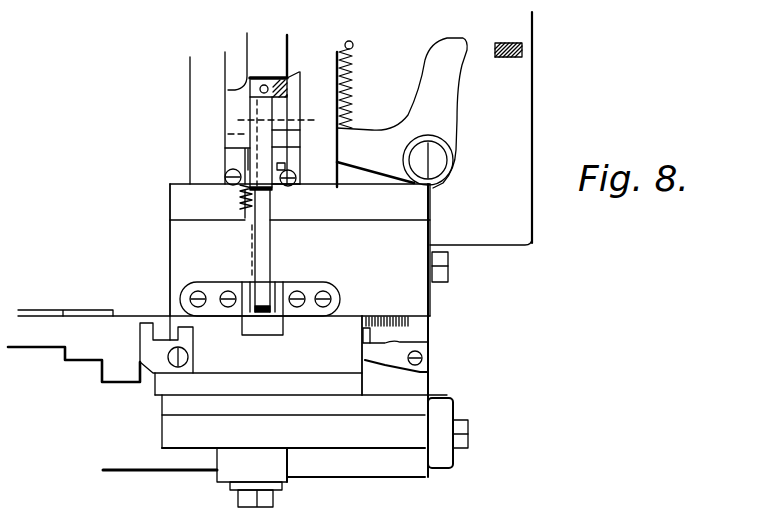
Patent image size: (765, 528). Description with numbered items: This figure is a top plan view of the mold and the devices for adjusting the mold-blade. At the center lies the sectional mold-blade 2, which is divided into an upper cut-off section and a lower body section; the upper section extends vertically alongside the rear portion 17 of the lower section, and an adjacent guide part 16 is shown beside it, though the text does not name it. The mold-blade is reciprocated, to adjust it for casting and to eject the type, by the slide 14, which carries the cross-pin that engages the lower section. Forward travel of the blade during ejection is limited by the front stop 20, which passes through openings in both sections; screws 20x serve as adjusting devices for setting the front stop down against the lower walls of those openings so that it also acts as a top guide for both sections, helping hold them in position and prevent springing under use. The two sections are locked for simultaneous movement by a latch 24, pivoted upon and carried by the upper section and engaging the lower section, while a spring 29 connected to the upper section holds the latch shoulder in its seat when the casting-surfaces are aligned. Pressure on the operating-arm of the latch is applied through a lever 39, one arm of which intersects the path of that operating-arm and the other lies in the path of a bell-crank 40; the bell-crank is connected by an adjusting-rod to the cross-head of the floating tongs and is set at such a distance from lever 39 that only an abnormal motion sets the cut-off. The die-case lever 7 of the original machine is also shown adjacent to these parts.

The sectional mold-blade 2 is at (267, 254).
The die-case lever 7 is at (310, 250).
The slide 14 is at (290, 113).
The sleeve 16 is at (255, 108).
The rear portion of the lower section 17 is at (299, 72).
The front stop 20 is at (279, 190).
The screws 20x is at (300, 185).
The latch 24 is at (259, 90).
The spring 29 is at (240, 205).
The lever 39 is at (402, 113).
The bell-crank 40 is at (502, 58).